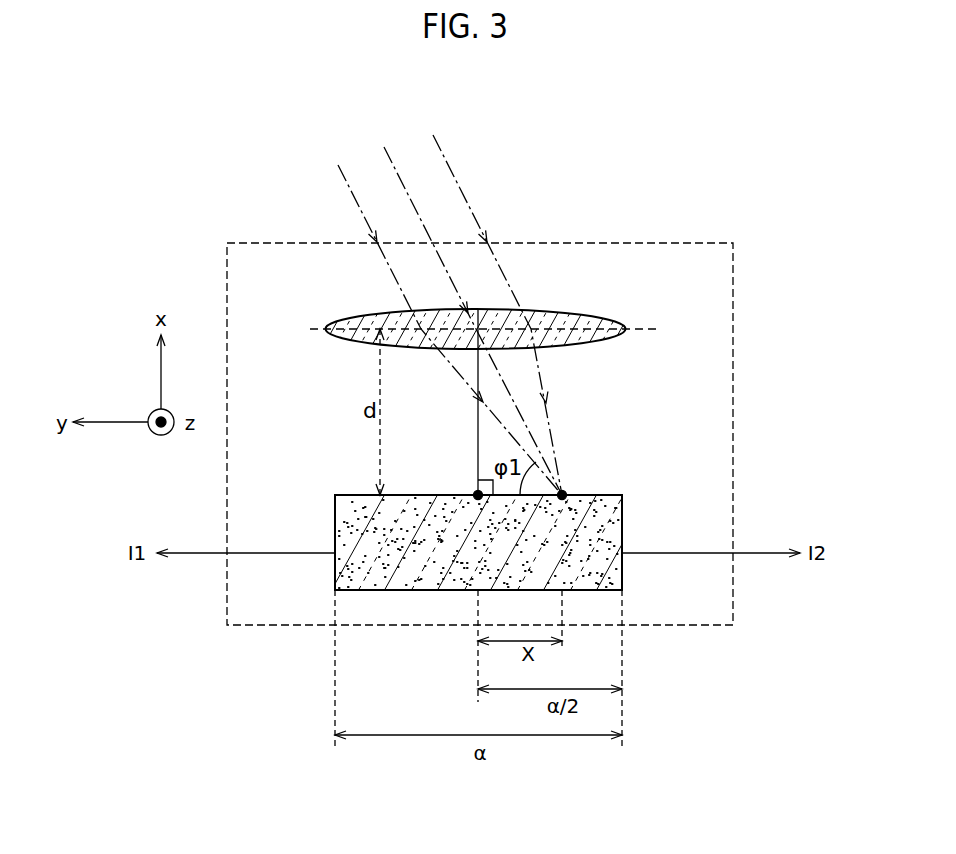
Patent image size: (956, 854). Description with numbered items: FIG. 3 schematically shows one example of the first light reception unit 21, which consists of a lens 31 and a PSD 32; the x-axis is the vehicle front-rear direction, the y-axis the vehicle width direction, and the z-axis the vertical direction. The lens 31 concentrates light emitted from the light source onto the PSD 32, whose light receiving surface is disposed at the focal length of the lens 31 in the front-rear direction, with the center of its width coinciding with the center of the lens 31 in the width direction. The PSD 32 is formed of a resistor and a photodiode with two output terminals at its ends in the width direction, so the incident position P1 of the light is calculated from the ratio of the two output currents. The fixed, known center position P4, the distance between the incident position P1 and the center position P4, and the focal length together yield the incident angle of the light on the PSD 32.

The first light reception unit 21 is at (735, 262).
The lens 31 is at (575, 310).
The PSD 32 is at (622, 522).
The incident position P1 is at (564, 493).
The center position P4 is at (476, 493).